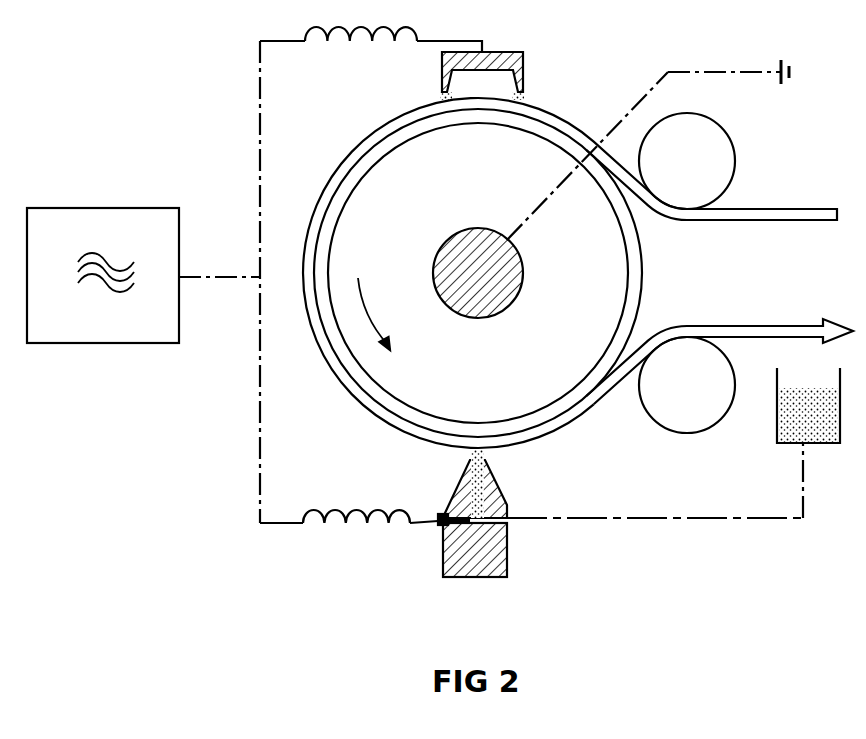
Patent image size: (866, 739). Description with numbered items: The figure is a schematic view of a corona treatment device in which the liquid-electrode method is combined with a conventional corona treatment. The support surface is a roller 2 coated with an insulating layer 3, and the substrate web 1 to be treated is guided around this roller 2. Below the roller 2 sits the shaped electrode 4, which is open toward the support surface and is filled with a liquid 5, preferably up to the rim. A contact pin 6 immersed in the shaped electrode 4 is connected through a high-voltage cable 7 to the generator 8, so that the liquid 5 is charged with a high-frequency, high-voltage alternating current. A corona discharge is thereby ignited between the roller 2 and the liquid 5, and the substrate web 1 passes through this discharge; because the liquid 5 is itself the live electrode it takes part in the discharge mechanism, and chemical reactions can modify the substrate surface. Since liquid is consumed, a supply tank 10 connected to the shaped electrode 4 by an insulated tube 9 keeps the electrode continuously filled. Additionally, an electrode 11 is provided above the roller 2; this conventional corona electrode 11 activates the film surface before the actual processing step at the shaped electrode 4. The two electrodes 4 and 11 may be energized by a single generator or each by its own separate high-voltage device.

The substrate web 1 is at (777, 323).
The roller 2 is at (368, 198).
The insulating layer 3 is at (388, 147).
The shaped electrode 4 is at (480, 577).
The liquid 5 is at (498, 500).
The contact pin 6 is at (441, 524).
The high-voltage cable 7 is at (340, 522).
The generator 8 is at (118, 343).
The insulated tube 9 is at (635, 518).
The supply tank 10 is at (777, 418).
The electrode 11 is at (523, 62).